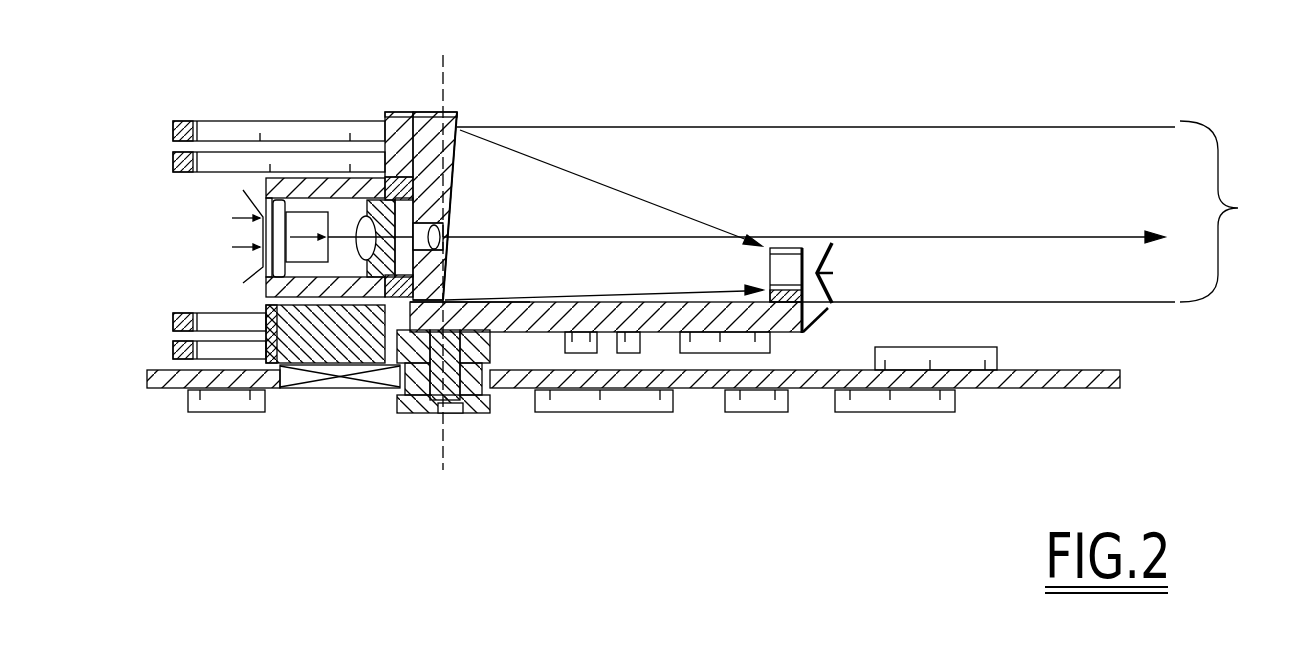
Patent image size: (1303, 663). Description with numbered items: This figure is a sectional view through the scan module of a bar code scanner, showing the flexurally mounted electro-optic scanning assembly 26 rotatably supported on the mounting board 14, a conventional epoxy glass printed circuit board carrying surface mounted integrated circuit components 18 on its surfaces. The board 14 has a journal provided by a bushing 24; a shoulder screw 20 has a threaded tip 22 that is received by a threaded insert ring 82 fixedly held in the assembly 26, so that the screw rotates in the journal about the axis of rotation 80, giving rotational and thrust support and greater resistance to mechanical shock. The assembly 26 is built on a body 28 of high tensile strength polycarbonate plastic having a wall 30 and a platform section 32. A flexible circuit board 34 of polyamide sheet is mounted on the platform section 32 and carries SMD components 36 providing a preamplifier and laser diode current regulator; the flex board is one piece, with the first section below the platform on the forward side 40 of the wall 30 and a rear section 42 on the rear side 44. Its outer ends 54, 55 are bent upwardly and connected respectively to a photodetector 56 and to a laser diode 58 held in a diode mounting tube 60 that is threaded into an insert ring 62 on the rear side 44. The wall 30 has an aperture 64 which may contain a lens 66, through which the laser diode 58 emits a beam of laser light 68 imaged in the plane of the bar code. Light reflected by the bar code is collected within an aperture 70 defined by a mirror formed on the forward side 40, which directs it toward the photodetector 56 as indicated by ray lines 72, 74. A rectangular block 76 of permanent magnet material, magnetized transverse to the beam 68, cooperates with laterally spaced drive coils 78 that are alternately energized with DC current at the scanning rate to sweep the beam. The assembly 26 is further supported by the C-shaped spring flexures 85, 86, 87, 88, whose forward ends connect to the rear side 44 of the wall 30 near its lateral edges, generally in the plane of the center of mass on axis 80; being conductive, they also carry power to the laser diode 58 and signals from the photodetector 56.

The mounting board 14 is at (147, 386).
The integrated circuit components 18 is at (213, 405).
The shoulder screw 20 is at (460, 402).
The threaded tip 22 is at (513, 302).
The bushing 24 is at (490, 398).
The electro-optic scanning assembly 26 is at (452, 102).
The body 28 is at (457, 116).
The wall 30 is at (400, 115).
The platform section 32 is at (698, 303).
The circuit board 34 is at (787, 334).
The SMD components 36 is at (600, 350).
The forward side 40 is at (452, 175).
The rear section 42 is at (243, 277).
The rear side 44 is at (385, 118).
The outer end 54 is at (832, 255).
The outer end 55 is at (247, 203).
The photodetector 56 is at (787, 250).
The laser diode 58 is at (253, 258).
The diode mounting tube 60 is at (266, 183).
The insert ring 62 is at (400, 205).
The aperture 64 is at (443, 233).
The lens 66 is at (442, 245).
The beam of laser light 68 is at (1020, 237).
The aperture 70 is at (866, 211).
The ray line 72 is at (625, 190).
The ray line 74 is at (653, 292).
The rectangular block of permanent magnet material 76 is at (313, 365).
The drive coils 78 is at (362, 378).
The axis of rotation 80 is at (446, 455).
The threaded insert ring 82 is at (440, 300).
The flexure 85 is at (173, 317).
The flexure 86 is at (173, 352).
The flexure 87 is at (173, 160).
The flexure 88 is at (173, 125).